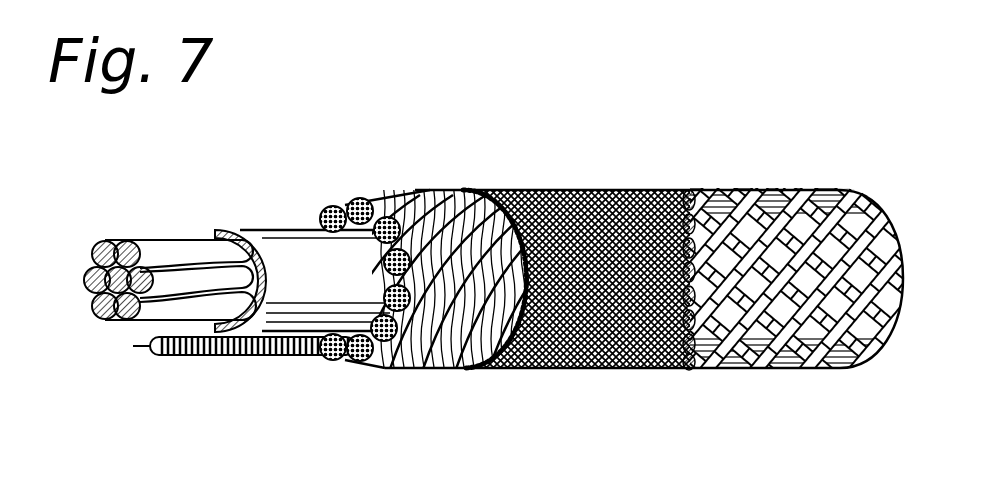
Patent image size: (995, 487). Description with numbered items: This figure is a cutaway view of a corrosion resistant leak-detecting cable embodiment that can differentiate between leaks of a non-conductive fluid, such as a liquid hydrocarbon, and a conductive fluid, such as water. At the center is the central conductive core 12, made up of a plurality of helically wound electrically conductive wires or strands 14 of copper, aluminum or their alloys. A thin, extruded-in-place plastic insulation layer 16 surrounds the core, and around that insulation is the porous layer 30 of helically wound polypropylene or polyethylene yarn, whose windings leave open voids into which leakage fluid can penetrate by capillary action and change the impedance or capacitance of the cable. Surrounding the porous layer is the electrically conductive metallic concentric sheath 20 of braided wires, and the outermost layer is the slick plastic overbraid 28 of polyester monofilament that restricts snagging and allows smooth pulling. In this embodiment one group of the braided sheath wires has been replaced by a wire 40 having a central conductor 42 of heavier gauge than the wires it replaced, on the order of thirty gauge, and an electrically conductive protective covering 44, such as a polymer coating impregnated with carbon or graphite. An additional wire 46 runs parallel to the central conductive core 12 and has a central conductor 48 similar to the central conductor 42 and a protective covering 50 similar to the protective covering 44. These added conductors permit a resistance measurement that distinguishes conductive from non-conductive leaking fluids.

The central conductive core 12 is at (111, 327).
The electrically conductive wires or strands 14 is at (201, 255).
The plastic insulation layer 16 is at (306, 250).
The metallic concentric sheath 20 is at (582, 178).
The plastic overbraid 28 is at (727, 370).
The porous layer 30 is at (417, 204).
The wire 40 is at (590, 370).
The central conductor 42 is at (565, 370).
The protective covering 44 is at (548, 189).
The additional wire 46 is at (186, 366).
The central conductor 48 is at (148, 350).
The protective covering 50 is at (287, 352).